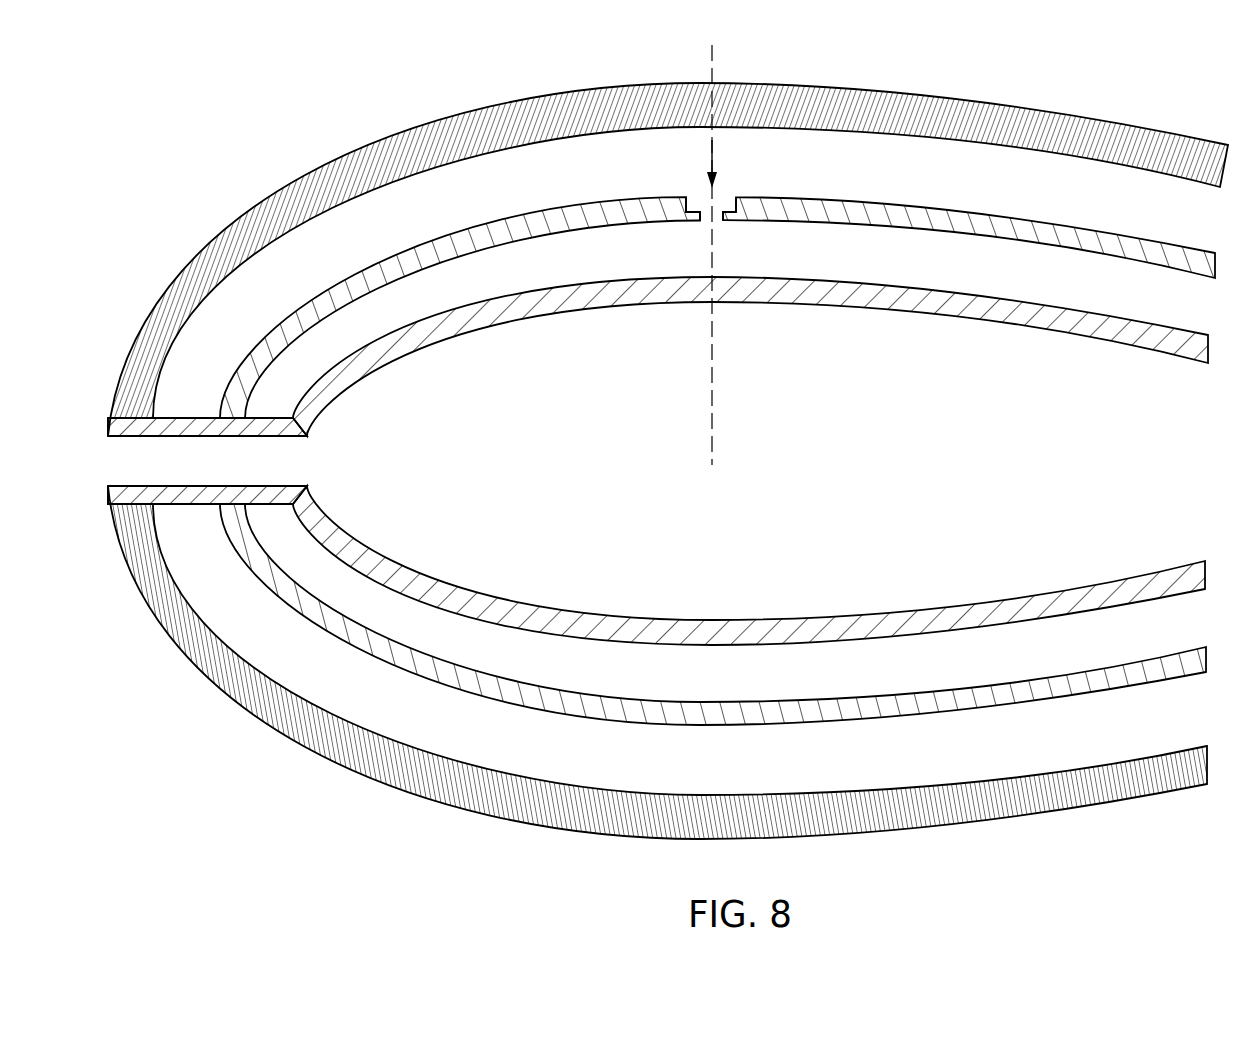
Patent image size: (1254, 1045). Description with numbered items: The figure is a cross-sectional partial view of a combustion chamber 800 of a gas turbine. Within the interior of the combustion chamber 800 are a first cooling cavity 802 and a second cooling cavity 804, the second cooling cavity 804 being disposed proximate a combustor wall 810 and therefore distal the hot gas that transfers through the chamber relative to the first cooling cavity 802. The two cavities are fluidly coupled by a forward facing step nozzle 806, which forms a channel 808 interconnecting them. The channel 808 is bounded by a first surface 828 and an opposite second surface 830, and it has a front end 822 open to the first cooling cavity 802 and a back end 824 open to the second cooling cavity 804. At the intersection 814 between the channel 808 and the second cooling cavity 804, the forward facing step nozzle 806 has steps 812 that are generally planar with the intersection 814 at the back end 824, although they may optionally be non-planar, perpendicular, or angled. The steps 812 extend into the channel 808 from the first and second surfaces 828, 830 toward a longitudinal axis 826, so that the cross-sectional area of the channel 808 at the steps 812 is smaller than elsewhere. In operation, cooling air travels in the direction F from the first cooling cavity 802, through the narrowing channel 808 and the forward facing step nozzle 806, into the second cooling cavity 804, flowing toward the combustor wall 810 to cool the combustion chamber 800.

The combustion chamber 800 is at (476, 90).
The first cooling cavity 802 is at (728, 112).
The second cooling cavity 804 is at (782, 232).
The forward facing step nozzle 806 is at (690, 218).
The channel 808 is at (722, 205).
The combustor wall 810 is at (648, 299).
The steps 812 is at (738, 224).
The intersection 814 is at (727, 224).
The front end 822 is at (688, 196).
The back end 824 is at (694, 221).
The longitudinal axis 826 is at (708, 48).
The first surface 828 is at (697, 205).
The second surface 830 is at (737, 190).